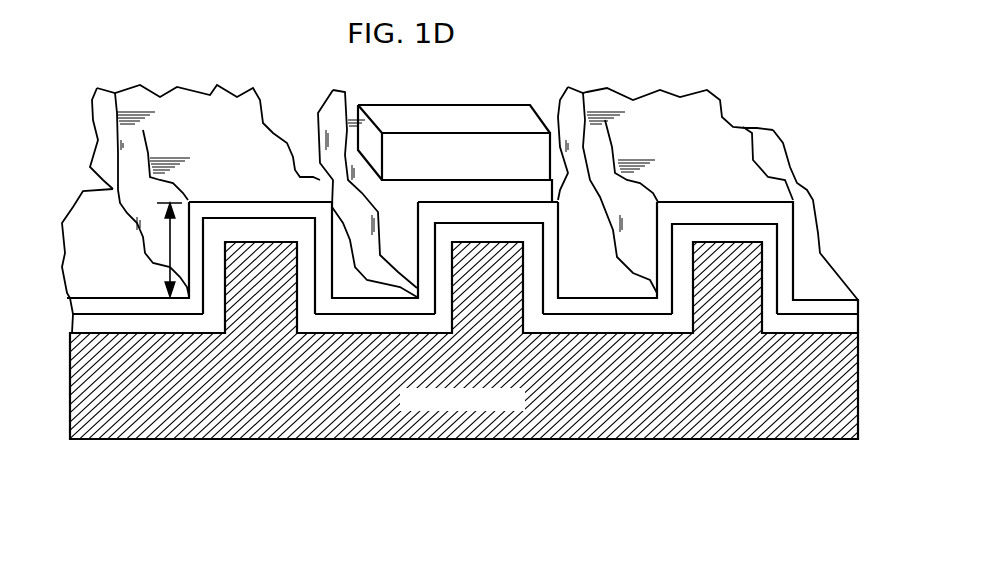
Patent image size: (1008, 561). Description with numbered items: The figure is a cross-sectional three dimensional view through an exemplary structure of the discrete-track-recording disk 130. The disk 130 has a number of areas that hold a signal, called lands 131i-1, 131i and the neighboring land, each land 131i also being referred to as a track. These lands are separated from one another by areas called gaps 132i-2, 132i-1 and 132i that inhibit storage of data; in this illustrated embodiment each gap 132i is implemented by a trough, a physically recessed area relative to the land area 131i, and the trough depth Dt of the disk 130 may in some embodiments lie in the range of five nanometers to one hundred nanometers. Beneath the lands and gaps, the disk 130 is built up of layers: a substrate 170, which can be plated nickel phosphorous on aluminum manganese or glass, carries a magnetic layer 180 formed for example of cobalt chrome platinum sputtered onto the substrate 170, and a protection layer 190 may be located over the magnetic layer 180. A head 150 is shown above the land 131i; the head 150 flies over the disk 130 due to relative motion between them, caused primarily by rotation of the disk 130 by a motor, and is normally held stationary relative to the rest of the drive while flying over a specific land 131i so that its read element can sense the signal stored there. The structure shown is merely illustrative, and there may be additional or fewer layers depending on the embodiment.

The discrete-track-recording disk 130 is at (528, 88).
The land 131i-1 is at (247, 150).
The land 131i is at (441, 162).
The gap 132i-2 is at (128, 291).
The gap 132i-1 is at (392, 296).
The gap 132i is at (618, 290).
The head 150 is at (475, 163).
The substrate 170 is at (600, 410).
The magnetic layer 180 is at (100, 323).
The protection layer 190 is at (777, 215).
The trough depth Dt is at (168, 251).